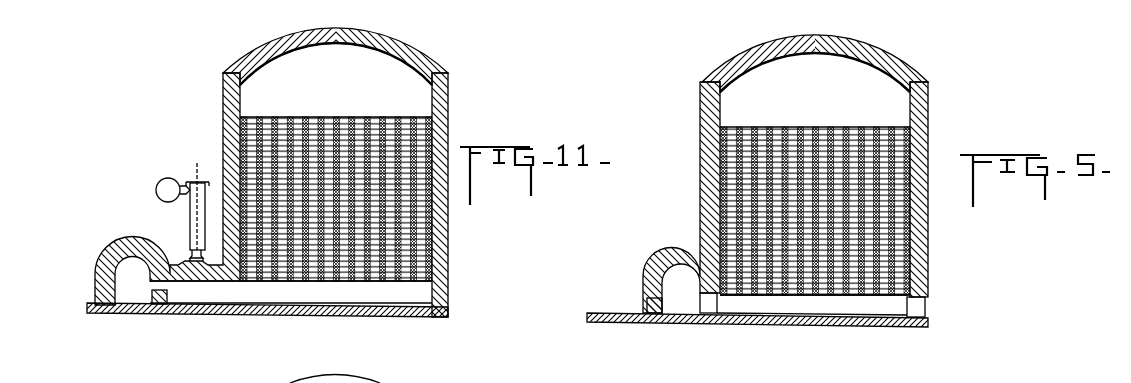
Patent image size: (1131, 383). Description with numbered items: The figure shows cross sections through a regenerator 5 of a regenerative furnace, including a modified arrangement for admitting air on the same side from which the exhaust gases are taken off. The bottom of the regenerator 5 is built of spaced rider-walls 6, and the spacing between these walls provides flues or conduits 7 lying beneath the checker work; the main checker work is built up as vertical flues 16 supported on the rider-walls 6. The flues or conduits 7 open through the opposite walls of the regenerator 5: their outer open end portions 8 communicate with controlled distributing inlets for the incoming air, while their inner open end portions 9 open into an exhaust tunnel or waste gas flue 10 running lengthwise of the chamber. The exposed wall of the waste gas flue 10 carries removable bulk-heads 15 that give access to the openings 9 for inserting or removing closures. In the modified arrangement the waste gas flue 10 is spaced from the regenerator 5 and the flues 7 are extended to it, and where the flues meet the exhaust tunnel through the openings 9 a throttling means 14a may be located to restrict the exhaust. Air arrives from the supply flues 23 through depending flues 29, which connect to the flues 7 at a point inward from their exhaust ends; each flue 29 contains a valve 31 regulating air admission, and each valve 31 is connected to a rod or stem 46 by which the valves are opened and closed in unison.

In FIG. 11, the regenerator 5 is at (380, 80).
In FIG. 5, the regenerator 5 is at (895, 111).
In FIG. 11, the rider-walls 6 is at (346, 307).
In FIG. 5, the rider-walls 6 is at (850, 307).
In FIG. 11, the flues or conduits 7 is at (291, 294).
In FIG. 5, the flues or conduits 7 is at (812, 305).
In FIG. 5, the outer open end portions 8 is at (920, 308).
In FIG. 5, the inner open end portions 9 is at (708, 310).
In FIG. 11, the exhaust tunnel or waste gas flue 10 is at (128, 287).
In FIG. 5, the exhaust tunnel or waste gas flue 10 is at (681, 197).
In FIG. 11, the throttling means 14a is at (158, 308).
In FIG. 5, the bulk-heads 15 is at (645, 300).
In FIG. 11, the vertical flues 16 is at (282, 130).
In FIG. 5, the vertical flues 16 is at (750, 130).
In FIG. 11, the flues 23 is at (159, 193).
In FIG. 11, the flues 29 is at (190, 206).
In FIG. 11, the valve 31 is at (190, 253).
In FIG. 11, the rod or stem 46 is at (197, 166).